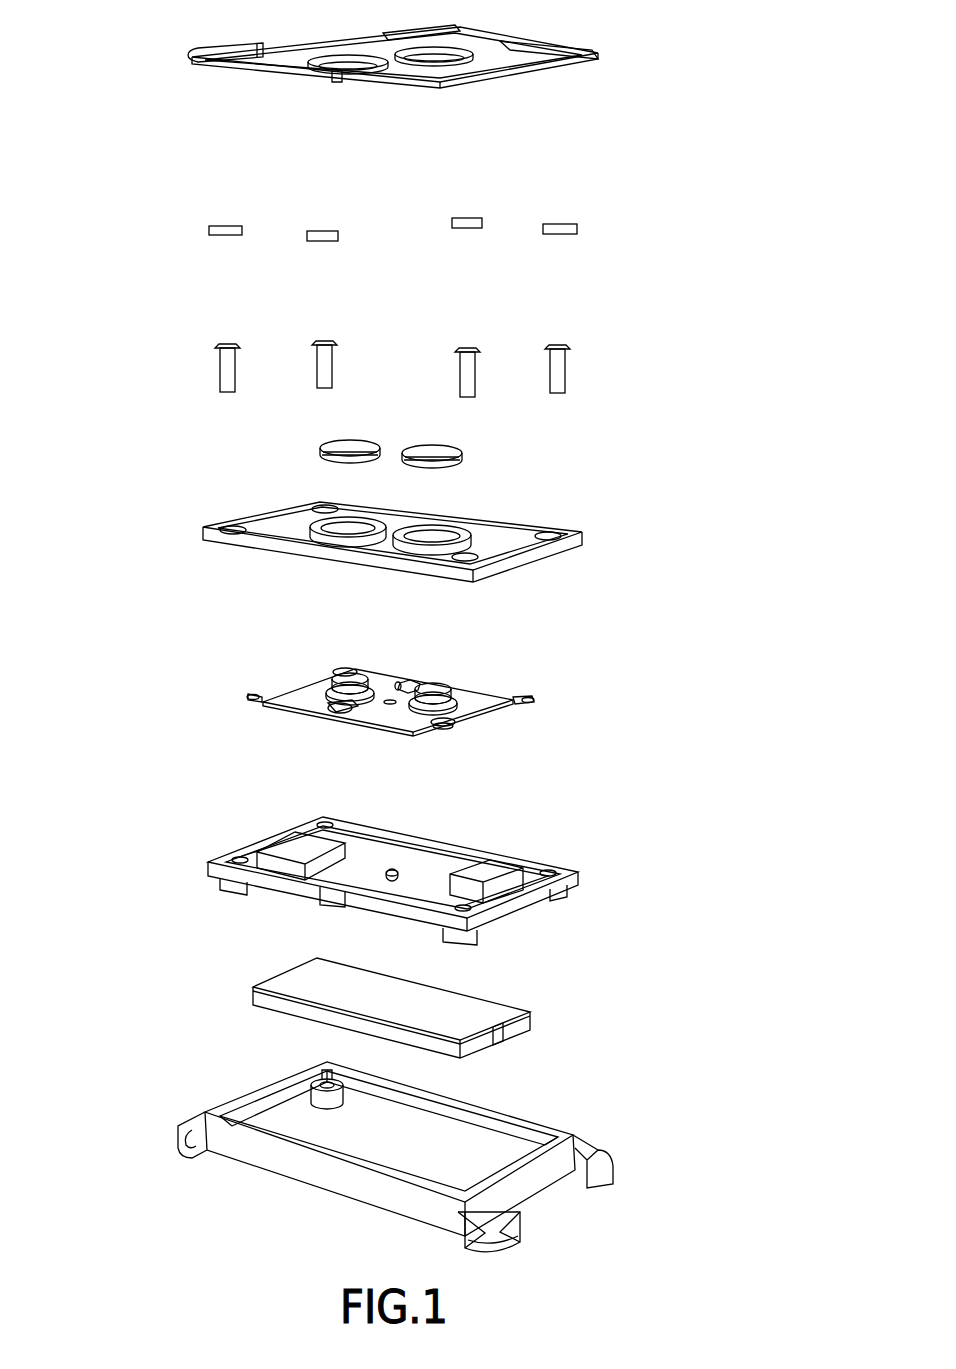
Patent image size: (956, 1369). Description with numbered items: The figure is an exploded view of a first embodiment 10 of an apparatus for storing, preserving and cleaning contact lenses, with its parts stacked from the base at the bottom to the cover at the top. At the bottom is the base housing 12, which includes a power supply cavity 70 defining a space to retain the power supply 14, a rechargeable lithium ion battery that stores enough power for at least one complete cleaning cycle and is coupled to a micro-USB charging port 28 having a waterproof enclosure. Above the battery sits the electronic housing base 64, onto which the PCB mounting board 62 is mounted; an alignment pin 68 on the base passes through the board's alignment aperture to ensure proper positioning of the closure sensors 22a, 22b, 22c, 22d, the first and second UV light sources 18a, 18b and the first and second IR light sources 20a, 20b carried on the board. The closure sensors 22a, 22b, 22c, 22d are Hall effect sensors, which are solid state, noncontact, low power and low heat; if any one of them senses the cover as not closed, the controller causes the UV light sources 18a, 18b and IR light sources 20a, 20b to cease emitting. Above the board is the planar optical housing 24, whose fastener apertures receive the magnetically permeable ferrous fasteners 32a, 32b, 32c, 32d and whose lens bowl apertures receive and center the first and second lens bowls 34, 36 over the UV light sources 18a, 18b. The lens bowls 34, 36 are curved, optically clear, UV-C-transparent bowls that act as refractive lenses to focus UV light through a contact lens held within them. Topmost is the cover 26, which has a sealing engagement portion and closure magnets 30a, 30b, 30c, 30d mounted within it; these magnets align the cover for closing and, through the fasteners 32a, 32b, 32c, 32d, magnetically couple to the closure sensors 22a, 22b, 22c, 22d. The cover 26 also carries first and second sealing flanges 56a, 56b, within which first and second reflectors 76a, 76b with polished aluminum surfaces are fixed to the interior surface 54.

The first embodiment 10 is at (143, 80).
The base housing 12 is at (575, 1157).
The power supply 14 is at (513, 1030).
The first UV light source 18a is at (453, 687).
The second UV light source 18b is at (335, 680).
The first IR light source 20a is at (413, 712).
The second IR light source 20b is at (367, 687).
The closure sensor 22a is at (532, 697).
The closure sensor 22b is at (457, 730).
The closure sensor 22c is at (252, 702).
The closure sensor 22d is at (343, 670).
The optical housing 24 is at (583, 538).
The cover 26 is at (592, 53).
The micro-USB charging port 28 is at (337, 712).
The closure magnet 30a is at (560, 234).
The closure magnet 30b is at (465, 228).
The closure magnet 30c is at (322, 242).
The closure magnet 30d is at (223, 235).
The magnetically permeable fastener 32a is at (565, 370).
The magnetically permeable fastener 32b is at (465, 350).
The magnetically permeable fastener 32c is at (332, 360).
The magnetically permeable fastener 32d is at (220, 372).
The first lens bowl 34 is at (462, 452).
The second lens bowl 36 is at (320, 446).
The interior surface 54 is at (288, 62).
The first sealing flange 56a is at (483, 55).
The second sealing flange 56b is at (327, 60).
The PCB mounting board 62 is at (487, 712).
The electronic housing base 64 is at (520, 905).
The alignment pin 68 is at (372, 877).
The power supply cavity 70 is at (317, 1135).
The first reflector 76a is at (438, 60).
The second reflector 76b is at (348, 68).